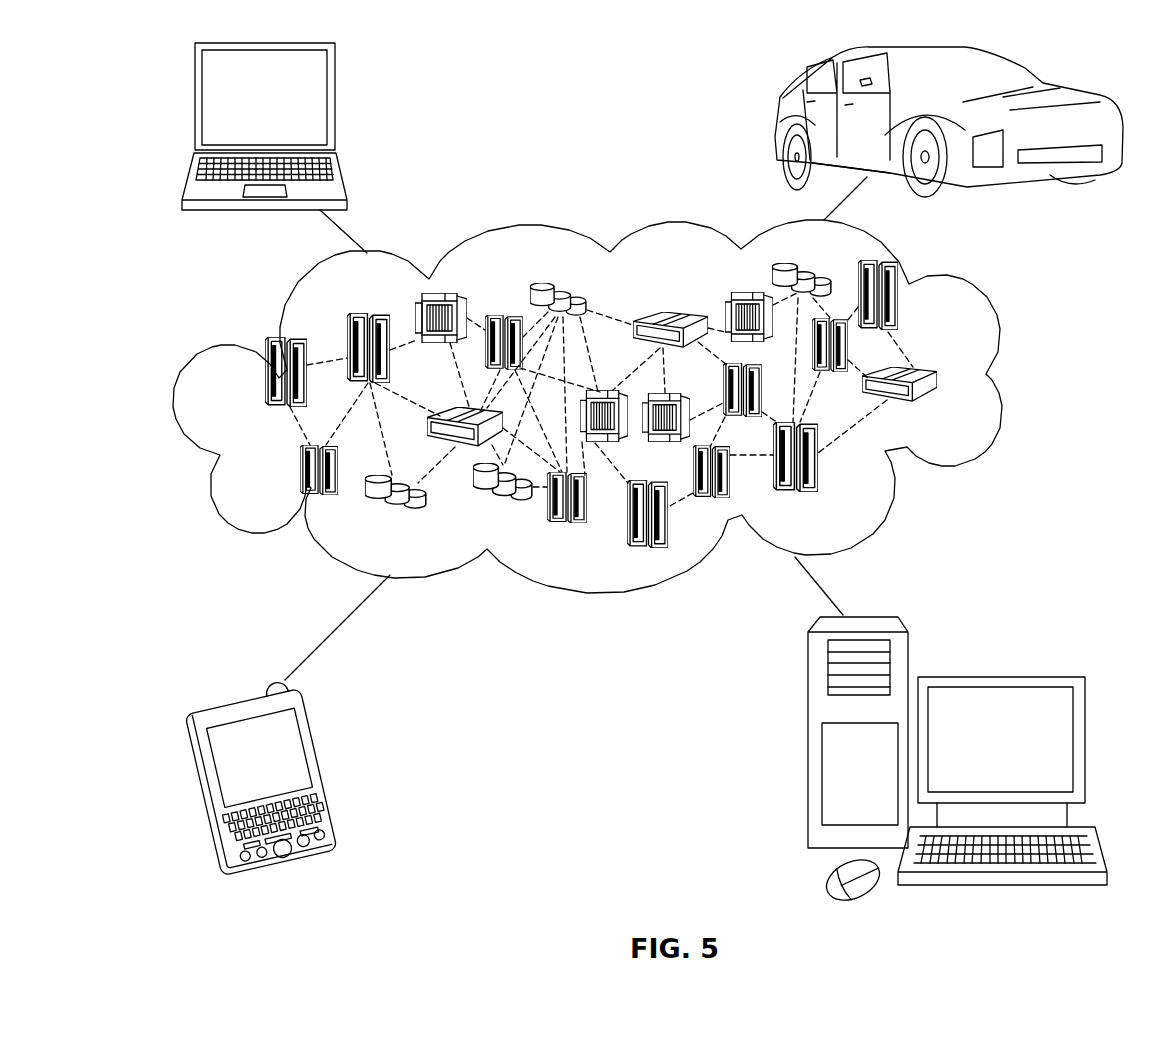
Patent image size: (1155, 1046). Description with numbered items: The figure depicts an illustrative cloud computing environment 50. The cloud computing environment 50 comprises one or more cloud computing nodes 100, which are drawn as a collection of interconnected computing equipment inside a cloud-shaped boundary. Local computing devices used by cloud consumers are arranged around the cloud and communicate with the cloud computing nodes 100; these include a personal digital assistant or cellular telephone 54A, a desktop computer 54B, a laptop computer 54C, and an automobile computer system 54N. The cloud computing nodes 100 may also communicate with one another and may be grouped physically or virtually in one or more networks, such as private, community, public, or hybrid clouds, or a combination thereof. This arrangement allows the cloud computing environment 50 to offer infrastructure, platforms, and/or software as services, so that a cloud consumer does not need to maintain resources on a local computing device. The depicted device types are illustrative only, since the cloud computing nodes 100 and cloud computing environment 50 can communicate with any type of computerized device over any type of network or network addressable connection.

The cloud computing environment 50 is at (998, 382).
The cloud computing nodes 100 is at (948, 416).
The personal digital assistant (PDA) or cellular telephone 54A is at (325, 768).
The desktop computer 54B is at (999, 676).
The laptop computer 54C is at (335, 105).
The automobile computer system 54N is at (780, 122).